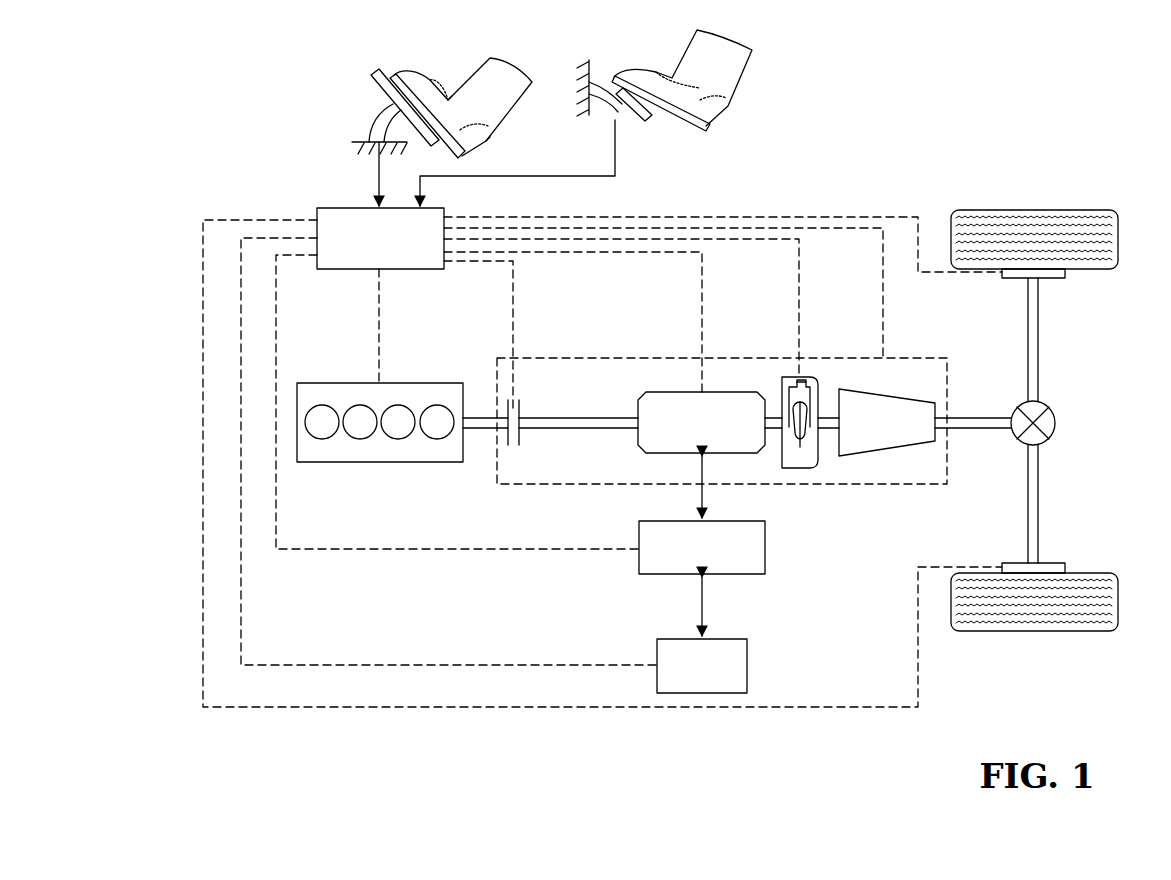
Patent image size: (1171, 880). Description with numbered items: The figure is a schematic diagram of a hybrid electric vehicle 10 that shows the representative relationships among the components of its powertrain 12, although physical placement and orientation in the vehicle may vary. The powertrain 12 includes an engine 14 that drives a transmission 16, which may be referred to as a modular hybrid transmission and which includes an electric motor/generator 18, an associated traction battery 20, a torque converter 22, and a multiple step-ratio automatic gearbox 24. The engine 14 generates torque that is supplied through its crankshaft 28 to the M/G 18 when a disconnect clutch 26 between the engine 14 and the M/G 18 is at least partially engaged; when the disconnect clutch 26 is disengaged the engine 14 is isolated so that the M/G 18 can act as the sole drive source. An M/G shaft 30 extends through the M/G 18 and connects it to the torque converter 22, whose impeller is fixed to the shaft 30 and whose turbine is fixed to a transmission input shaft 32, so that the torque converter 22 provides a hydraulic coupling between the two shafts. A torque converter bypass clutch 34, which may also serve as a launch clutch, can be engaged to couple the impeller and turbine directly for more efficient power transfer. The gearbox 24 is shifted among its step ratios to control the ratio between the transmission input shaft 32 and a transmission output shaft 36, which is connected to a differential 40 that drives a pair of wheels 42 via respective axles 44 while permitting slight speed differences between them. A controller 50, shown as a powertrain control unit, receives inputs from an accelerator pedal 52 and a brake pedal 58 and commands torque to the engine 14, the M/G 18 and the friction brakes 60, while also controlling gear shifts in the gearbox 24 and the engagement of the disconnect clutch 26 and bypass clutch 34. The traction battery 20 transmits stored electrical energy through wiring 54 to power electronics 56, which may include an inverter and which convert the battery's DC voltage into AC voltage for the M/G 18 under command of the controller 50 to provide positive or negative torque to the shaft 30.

The hybrid electric vehicle 10 is at (830, 136).
The powertrain 12 is at (505, 573).
The engine 14 is at (340, 383).
The transmission 16 is at (770, 358).
The electric motor/generator 18 is at (672, 392).
The traction battery 20 is at (747, 665).
The torque converter 22 is at (798, 468).
The gearbox 24 is at (887, 455).
The disconnect clutch 26 is at (520, 410).
The crankshaft 28 is at (490, 415).
The M/G shaft 30 is at (588, 417).
The transmission input shaft 32 is at (830, 415).
The torque converter bypass clutch 34 is at (803, 380).
The transmission output shaft 36 is at (985, 416).
The differential 40 is at (1056, 425).
The wheels 42 is at (1035, 208).
The axles 44 is at (1040, 336).
The controller 50 is at (345, 208).
The accelerator pedal 52 is at (374, 100).
The wiring 54 is at (705, 610).
The power electronics 56 is at (765, 548).
The brake pedal 58 is at (650, 122).
The friction brakes 60 is at (1067, 274).